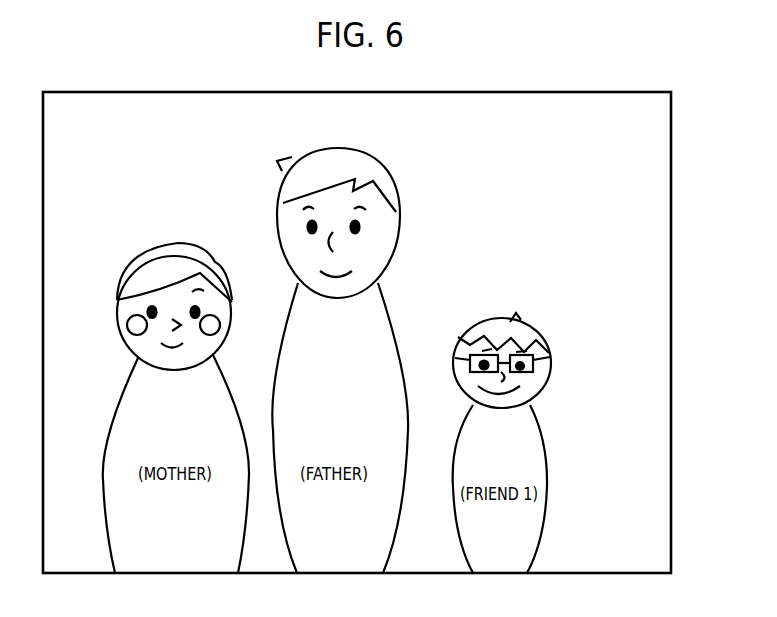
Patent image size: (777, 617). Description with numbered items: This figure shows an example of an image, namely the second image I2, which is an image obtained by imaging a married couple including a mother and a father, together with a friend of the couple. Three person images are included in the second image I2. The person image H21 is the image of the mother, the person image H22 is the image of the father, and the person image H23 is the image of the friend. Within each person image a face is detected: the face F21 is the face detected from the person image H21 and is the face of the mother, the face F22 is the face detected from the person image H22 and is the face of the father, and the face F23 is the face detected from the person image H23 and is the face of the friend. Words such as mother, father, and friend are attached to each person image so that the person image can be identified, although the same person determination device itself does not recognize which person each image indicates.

The second image I2 is at (671, 374).
The face F21 is at (118, 277).
The person image H21 is at (168, 241).
The face F22 is at (285, 161).
The person image H22 is at (313, 146).
The face F23 is at (545, 335).
The person image H23 is at (492, 304).